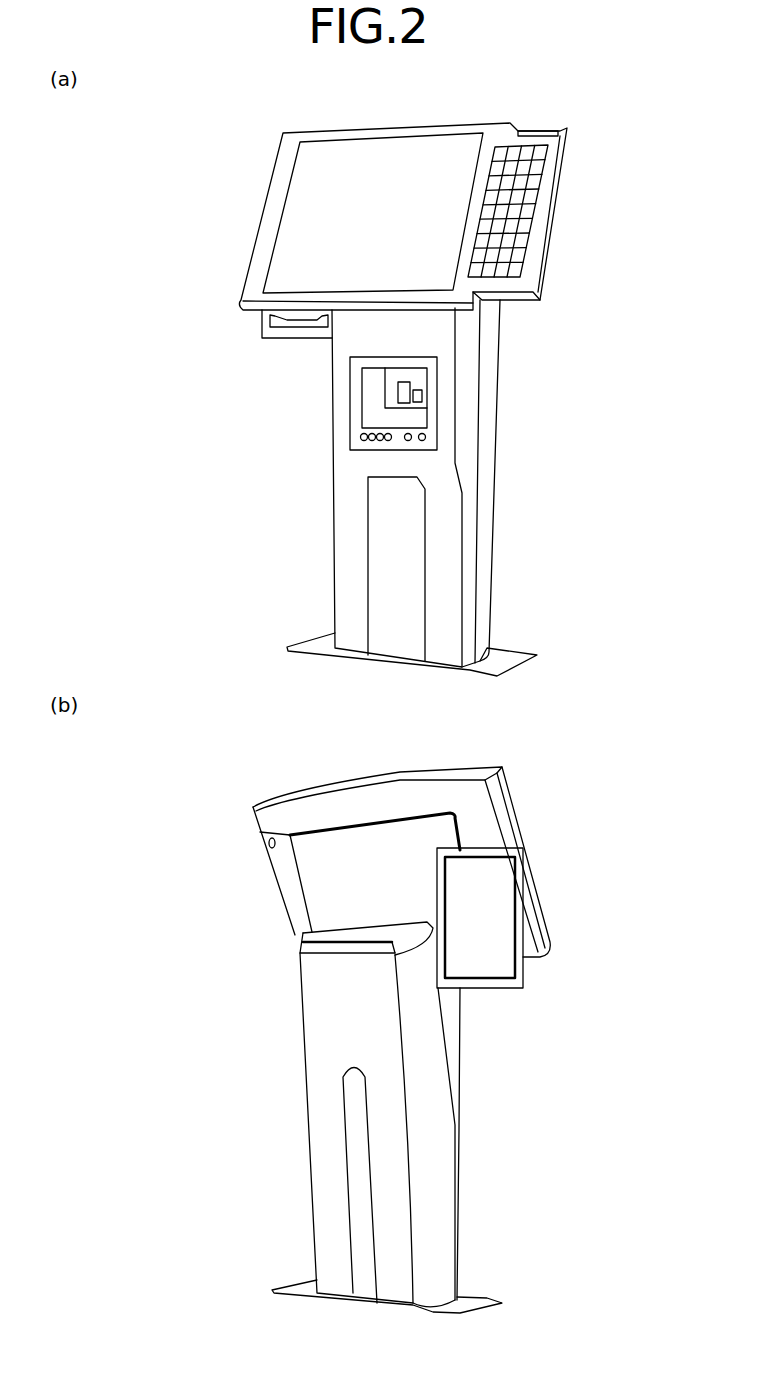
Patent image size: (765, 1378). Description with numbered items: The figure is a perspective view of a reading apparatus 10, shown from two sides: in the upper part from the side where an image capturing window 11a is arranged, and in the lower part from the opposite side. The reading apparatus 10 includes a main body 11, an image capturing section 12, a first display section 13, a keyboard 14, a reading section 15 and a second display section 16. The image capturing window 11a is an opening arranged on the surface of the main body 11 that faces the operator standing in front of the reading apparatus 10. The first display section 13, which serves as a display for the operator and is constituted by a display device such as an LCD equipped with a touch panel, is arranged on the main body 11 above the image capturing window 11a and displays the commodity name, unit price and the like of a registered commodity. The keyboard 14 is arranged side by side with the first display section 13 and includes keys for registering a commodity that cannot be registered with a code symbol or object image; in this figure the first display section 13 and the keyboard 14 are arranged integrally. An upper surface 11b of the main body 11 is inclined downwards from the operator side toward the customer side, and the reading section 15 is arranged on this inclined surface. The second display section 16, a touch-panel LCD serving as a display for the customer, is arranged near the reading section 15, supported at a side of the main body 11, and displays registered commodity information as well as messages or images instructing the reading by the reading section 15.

The reading apparatus 10 is at (600, 110).
The main body 11 is at (500, 353).
The image capturing window 11a is at (350, 387).
The upper surface 11b is at (303, 935).
The image capturing section 12 is at (420, 397).
The first display section 13 is at (363, 123).
The keyboard 14 is at (538, 128).
The reading section 15 is at (335, 972).
The second display section 16 is at (260, 332).